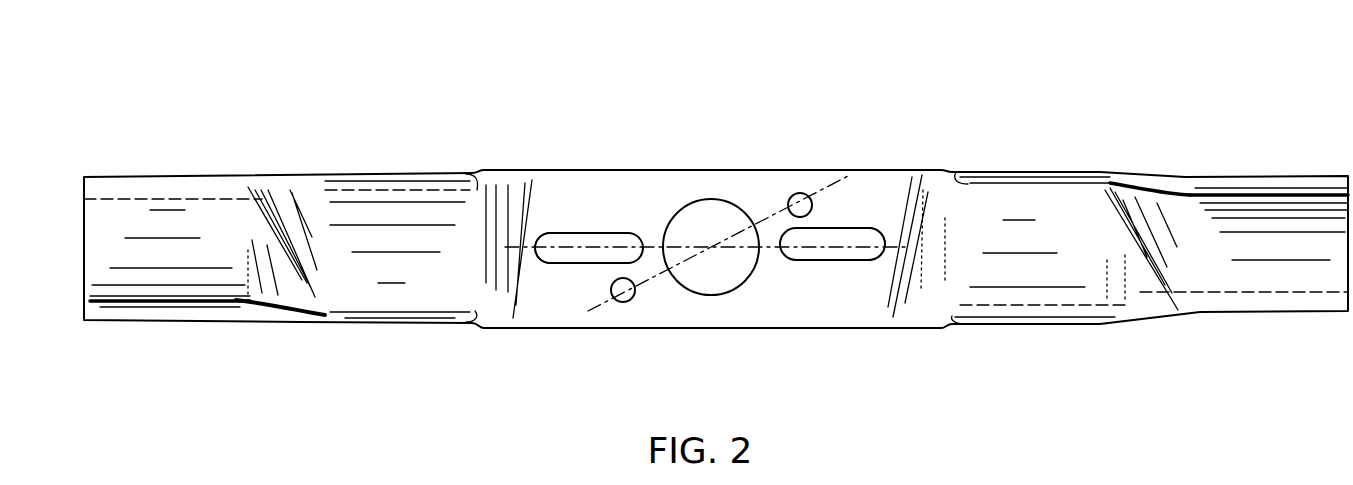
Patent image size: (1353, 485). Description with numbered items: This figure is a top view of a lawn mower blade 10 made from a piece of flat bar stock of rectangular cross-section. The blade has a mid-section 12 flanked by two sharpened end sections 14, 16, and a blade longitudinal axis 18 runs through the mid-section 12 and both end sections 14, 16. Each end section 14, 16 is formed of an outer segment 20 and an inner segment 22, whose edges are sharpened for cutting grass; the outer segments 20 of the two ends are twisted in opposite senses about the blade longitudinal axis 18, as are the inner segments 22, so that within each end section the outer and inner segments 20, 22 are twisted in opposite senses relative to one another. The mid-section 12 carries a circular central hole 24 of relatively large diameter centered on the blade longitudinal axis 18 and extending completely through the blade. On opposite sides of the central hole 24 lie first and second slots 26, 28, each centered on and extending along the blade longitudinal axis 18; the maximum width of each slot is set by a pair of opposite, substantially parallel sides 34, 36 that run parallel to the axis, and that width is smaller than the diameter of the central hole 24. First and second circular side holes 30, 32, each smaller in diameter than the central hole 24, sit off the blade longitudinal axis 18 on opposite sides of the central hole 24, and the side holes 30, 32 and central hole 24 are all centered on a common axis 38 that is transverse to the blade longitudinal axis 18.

The lawn mower blade 10 is at (263, 141).
The mid-section 12 is at (645, 188).
The end section 14 is at (337, 175).
The end section 16 is at (1130, 172).
The blade longitudinal axis 18 is at (895, 188).
The outer segment 20 is at (128, 212).
The inner segment 22 is at (400, 202).
The central hole 24 is at (695, 202).
The first slot 26 is at (595, 233).
The second slot 28 is at (860, 228).
The first side hole 30 is at (625, 302).
The second side hole 32 is at (800, 193).
The parallel side 34 is at (563, 233).
The parallel side 36 is at (560, 263).
The common axis 38 is at (774, 214).